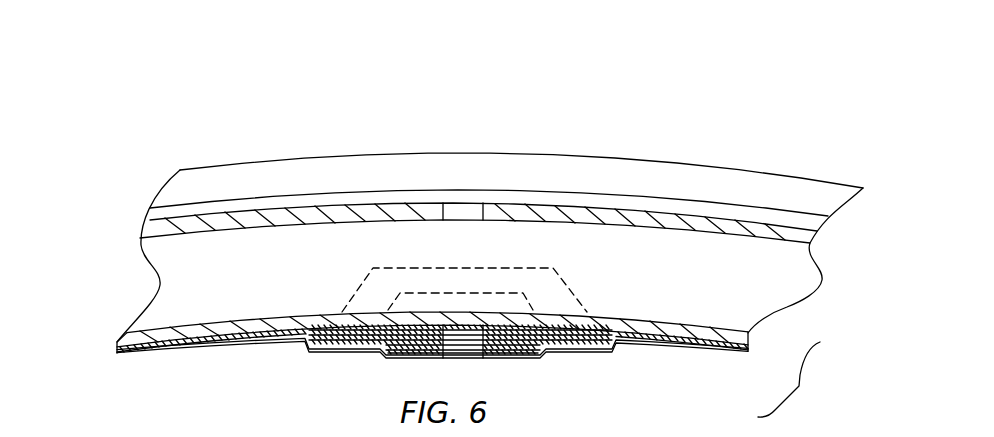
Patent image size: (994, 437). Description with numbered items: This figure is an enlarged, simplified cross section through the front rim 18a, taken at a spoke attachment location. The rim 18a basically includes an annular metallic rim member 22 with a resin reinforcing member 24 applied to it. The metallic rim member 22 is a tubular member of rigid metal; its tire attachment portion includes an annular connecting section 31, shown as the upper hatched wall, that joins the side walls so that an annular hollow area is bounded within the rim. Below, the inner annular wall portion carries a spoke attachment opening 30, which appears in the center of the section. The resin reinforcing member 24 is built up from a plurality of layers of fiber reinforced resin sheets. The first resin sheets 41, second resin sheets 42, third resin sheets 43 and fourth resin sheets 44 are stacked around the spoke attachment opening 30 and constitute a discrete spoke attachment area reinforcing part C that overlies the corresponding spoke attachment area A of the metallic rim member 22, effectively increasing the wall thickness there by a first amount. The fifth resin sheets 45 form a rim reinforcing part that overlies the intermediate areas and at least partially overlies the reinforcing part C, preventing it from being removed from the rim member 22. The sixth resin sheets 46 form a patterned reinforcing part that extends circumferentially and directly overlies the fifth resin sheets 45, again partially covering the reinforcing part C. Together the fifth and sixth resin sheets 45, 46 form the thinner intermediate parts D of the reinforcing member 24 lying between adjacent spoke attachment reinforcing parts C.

The rim 18a is at (797, 379).
The annular metallic rim member 22 is at (773, 320).
The resin reinforcing member 24 is at (682, 358).
The spoke attachment opening 30 is at (447, 316).
The annular connecting section 31 is at (716, 217).
The first resin sheets 41 is at (432, 325).
The second resin sheets 42 is at (497, 325).
The third resin sheets 43 is at (547, 348).
The fourth resin sheets 44 is at (339, 330).
The fifth resin sheets 45 is at (236, 336).
The sixth resin sheets 46 is at (134, 357).
The spoke attachment areas A is at (610, 113).
The discrete spoke attachment area reinforcing parts C is at (573, 362).
The intermediate parts D is at (185, 362).